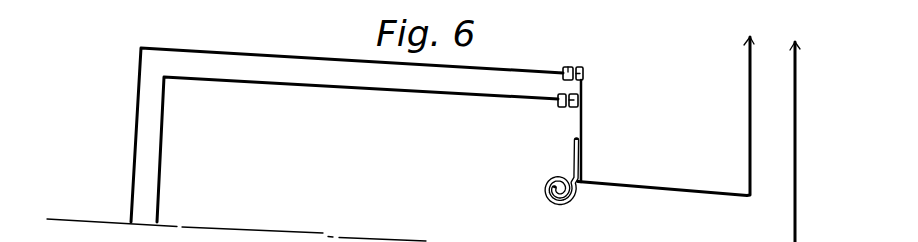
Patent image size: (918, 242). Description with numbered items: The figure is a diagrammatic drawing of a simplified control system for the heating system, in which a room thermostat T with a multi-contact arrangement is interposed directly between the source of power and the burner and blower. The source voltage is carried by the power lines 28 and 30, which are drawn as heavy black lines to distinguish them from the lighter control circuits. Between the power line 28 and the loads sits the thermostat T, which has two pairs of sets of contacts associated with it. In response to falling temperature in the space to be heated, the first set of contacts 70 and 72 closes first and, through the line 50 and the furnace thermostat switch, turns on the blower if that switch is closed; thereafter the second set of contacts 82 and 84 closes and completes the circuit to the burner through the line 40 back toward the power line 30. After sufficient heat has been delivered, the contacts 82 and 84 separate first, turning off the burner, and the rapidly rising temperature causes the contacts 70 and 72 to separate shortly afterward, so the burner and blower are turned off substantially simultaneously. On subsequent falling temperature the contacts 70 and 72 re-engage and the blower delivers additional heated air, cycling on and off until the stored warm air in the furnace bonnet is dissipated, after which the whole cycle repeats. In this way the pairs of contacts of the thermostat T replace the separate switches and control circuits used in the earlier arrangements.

The power line 28 is at (742, 122).
The power line 30 is at (793, 153).
The line 40 is at (162, 172).
The line 50 is at (134, 150).
The contact 70 is at (585, 72).
The contact 72 is at (571, 65).
The contact 82 is at (583, 95).
The contact 84 is at (561, 110).
The thermostat T is at (583, 155).